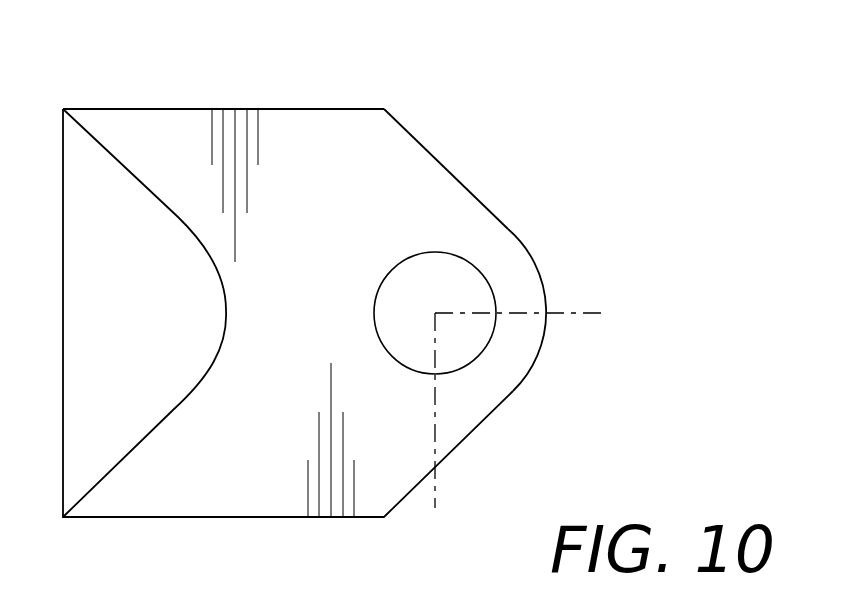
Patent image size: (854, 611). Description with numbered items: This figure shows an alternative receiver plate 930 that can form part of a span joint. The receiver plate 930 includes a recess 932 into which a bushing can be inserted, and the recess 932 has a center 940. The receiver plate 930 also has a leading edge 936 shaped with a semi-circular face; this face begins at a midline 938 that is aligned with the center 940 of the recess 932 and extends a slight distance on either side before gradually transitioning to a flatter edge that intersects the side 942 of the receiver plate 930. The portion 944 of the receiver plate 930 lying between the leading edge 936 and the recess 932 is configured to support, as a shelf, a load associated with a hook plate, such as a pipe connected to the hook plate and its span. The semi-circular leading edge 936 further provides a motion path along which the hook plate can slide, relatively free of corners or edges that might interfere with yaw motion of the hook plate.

The receiver plate 930 is at (230, 409).
The recess 932 is at (388, 312).
The leading edge 936 is at (535, 362).
The midline 938 is at (585, 312).
The center 940 is at (435, 312).
The side 942 is at (292, 109).
The portion 944 is at (487, 265).